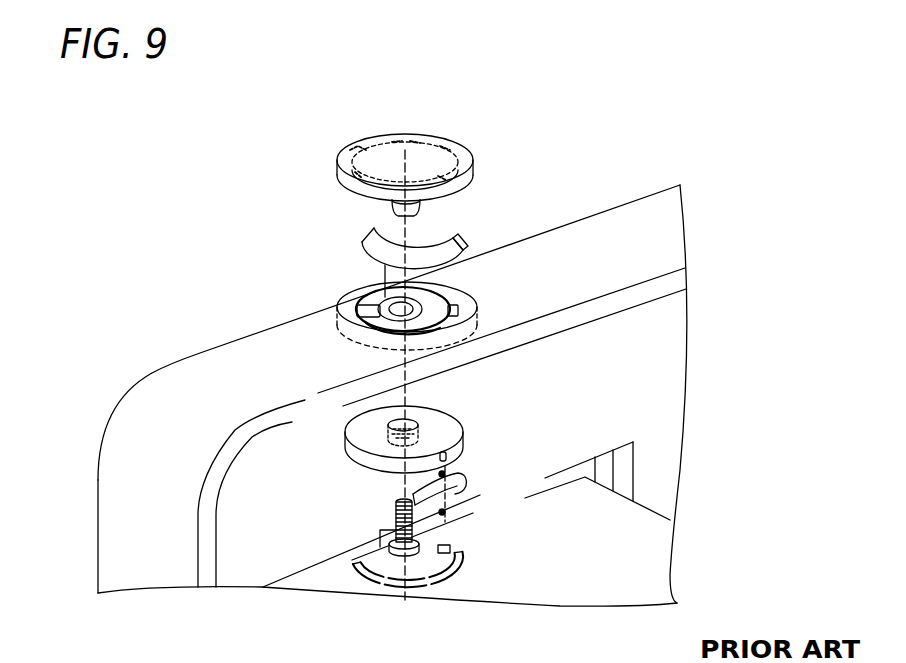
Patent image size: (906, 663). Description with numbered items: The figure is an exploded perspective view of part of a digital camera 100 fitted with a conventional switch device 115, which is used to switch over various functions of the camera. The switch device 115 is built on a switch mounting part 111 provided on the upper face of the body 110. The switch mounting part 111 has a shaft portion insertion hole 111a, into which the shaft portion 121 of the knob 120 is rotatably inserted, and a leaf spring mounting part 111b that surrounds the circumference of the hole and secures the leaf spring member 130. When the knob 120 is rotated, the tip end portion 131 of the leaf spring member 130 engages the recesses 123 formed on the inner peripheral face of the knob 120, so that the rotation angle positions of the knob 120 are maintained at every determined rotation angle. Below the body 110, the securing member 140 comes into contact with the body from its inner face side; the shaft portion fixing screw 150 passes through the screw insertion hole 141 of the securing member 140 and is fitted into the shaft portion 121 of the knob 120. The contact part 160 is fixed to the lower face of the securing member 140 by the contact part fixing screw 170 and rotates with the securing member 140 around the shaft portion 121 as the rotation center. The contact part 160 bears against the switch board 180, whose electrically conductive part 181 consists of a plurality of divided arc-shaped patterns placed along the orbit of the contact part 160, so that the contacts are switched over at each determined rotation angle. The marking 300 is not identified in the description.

The digital camera 100 is at (685, 94).
The body 110 is at (580, 228).
The switch mounting part 111 is at (370, 290).
The shaft portion insertion hole 111a is at (337, 309).
The leaf spring mounting part 111b is at (450, 300).
The switch device 115 is at (433, 112).
The knob 120 is at (383, 132).
The shaft portion 121 is at (392, 203).
The recesses 123 is at (474, 176).
The leaf spring member 130 is at (366, 232).
The tip end portion 131 is at (456, 243).
The securing member 140 is at (438, 406).
The screw insertion hole 141 is at (390, 433).
The shaft portion fixing screw 150 is at (400, 486).
The contact part 160 is at (460, 445).
The contact part fixing screw 170 is at (443, 550).
The switch board 180 is at (603, 597).
The electrically conductive part 181 is at (458, 570).
The surface region 300 is at (333, 345).